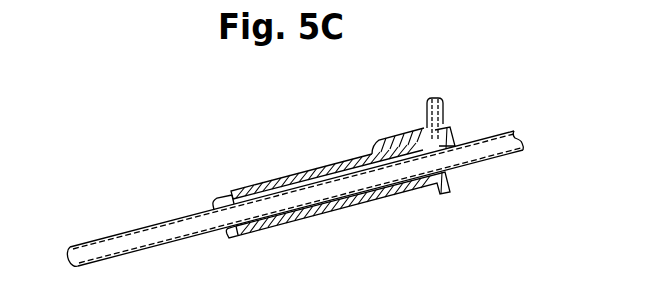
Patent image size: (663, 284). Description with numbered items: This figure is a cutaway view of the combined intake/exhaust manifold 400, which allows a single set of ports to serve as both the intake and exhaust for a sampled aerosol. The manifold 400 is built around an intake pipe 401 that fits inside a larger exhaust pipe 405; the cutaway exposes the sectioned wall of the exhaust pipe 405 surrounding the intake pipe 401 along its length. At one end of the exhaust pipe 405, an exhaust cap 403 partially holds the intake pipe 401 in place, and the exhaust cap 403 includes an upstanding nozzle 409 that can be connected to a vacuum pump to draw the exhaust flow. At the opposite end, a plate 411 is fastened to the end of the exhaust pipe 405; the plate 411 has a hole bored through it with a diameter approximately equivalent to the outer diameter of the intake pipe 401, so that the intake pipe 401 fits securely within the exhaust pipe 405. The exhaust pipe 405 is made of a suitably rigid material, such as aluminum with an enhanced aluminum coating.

The combined intake/exhaust manifold 400 is at (196, 95).
The intake pipe 401 is at (100, 237).
The exhaust cap 403 is at (410, 132).
The exhaust pipe 405 is at (337, 161).
The nozzle 409 is at (446, 118).
The plate 411 is at (216, 201).